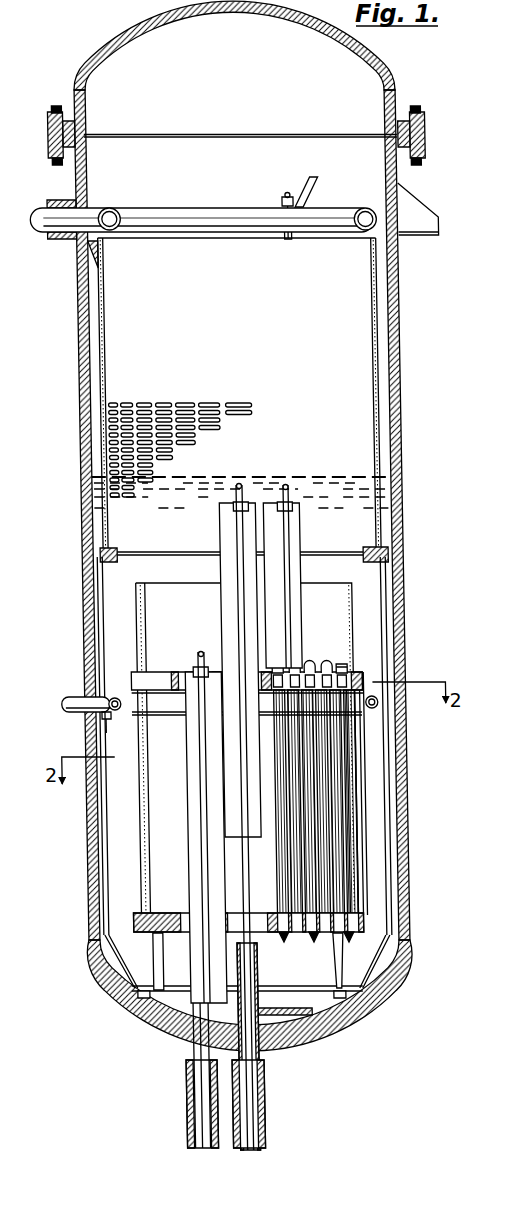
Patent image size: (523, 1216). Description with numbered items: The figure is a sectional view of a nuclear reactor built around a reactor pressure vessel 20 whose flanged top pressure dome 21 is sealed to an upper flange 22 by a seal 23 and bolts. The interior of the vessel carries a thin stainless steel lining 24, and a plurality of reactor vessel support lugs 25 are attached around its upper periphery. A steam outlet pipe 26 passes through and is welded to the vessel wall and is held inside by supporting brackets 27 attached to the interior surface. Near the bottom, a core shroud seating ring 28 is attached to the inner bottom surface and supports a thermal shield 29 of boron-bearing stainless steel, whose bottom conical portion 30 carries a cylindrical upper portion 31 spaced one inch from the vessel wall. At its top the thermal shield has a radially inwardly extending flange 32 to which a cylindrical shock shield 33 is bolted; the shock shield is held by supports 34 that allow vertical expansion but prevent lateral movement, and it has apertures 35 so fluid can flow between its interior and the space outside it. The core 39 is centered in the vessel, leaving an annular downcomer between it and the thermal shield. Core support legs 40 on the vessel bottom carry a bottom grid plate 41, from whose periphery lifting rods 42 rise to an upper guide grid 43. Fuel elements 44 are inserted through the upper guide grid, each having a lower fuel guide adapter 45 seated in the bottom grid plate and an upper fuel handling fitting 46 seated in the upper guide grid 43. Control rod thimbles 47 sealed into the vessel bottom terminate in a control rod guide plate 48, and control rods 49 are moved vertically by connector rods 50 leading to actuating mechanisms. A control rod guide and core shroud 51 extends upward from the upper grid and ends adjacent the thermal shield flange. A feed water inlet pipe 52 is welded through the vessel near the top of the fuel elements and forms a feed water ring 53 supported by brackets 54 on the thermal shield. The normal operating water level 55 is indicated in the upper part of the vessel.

The reactor pressure vessel 20 is at (404, 291).
The flanged top pressure dome 21 is at (407, 74).
The upper flange 22 is at (433, 143).
The seal 23 is at (420, 169).
The lining 24 is at (94, 282).
The reactor vessel support lugs 25 is at (437, 223).
The steam outlet pipe 26 is at (47, 211).
The supporting brackets 27 is at (318, 197).
The core shroud seating ring 28 is at (135, 997).
The thermal shield 29 is at (106, 588).
The bottom conical portion 30 is at (367, 973).
The cylindrical upper portion 31 is at (380, 828).
The radially inwardly extending flange 32 is at (389, 573).
The cylindrical shock shield 33 is at (383, 455).
The supports 34 is at (97, 253).
The apertures 35 is at (245, 409).
The core 39 is at (366, 750).
The core support legs 40 is at (156, 958).
The bottom grid plate 41 is at (342, 937).
The lifting rods 42 is at (134, 818).
The upper guide grid 43 is at (353, 670).
The fuel elements 44 is at (343, 872).
The lower fuel guide adapter 45 is at (294, 933).
The upper fuel handling fitting 46 is at (322, 677).
The control rod thimbles 47 is at (256, 1047).
The control rod guide plate 48 is at (296, 1014).
The control rods 49 is at (232, 593).
The connector rods 50 is at (192, 1047).
The control rod guide and core shroud 51 is at (336, 617).
The feed water inlet pipe 52 is at (69, 695).
The feed water ring 53 is at (112, 699).
The brackets 54 is at (111, 720).
The water level 55 is at (285, 481).